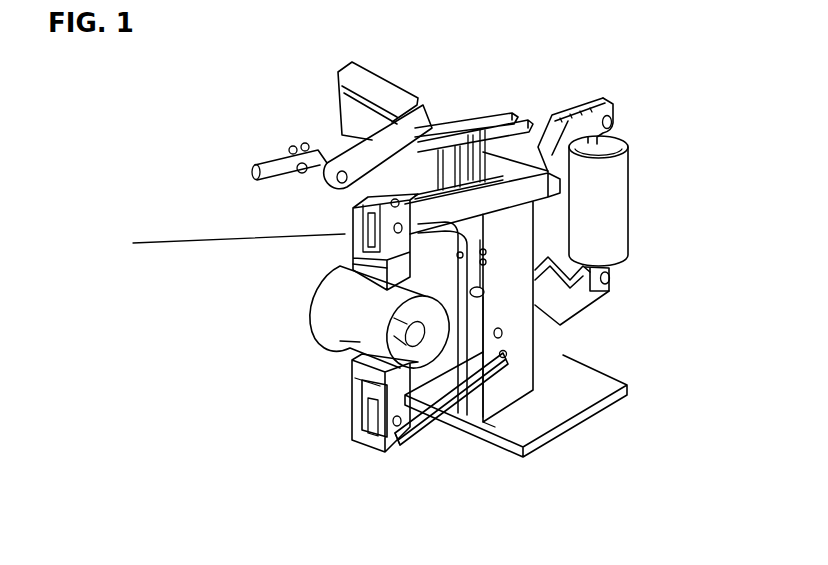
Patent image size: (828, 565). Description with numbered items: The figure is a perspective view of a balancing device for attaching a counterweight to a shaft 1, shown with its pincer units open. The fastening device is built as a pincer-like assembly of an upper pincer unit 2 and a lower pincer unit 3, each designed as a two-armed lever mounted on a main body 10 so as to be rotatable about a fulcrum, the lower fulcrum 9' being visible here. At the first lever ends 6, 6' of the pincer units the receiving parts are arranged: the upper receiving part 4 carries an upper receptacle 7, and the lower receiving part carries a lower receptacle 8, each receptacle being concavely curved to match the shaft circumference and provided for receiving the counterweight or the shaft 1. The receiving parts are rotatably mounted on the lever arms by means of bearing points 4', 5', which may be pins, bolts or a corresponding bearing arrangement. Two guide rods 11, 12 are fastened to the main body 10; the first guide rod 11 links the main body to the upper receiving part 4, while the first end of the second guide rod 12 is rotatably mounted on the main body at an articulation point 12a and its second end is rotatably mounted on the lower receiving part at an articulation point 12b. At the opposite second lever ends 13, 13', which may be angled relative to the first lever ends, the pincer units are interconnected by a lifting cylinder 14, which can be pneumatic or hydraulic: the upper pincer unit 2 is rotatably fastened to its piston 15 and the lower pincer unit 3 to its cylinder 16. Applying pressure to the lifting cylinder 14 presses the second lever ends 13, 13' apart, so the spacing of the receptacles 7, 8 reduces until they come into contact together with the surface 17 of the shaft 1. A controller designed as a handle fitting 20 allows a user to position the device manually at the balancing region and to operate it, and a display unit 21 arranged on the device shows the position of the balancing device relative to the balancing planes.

The shaft 1 is at (330, 323).
The upper pincer unit 2 is at (345, 234).
The lower pincer unit 3 is at (348, 434).
The upper receiving part 4 is at (322, 242).
The bearing point 4' is at (296, 220).
The bearing point 5' is at (347, 464).
The first lever end 6 is at (482, 241).
The first lever end 6' is at (495, 457).
The upper receptacle 7 is at (345, 277).
The lower receptacle 8 is at (353, 377).
The fulcrum 9' is at (520, 355).
The main body 10 is at (627, 388).
The first guide rod 11 is at (417, 205).
The second guide rod 12 is at (437, 423).
The articulation point 12a is at (503, 357).
The articulation point 12b is at (403, 447).
The second lever end 13 is at (558, 108).
The second lever end 13' is at (602, 301).
The lifting cylinder 14 is at (608, 200).
The piston 15 is at (630, 142).
The cylinder 16 is at (612, 267).
The surface of the shaft 17 is at (360, 342).
The handle fitting 20 is at (255, 168).
The display unit 21 is at (355, 72).